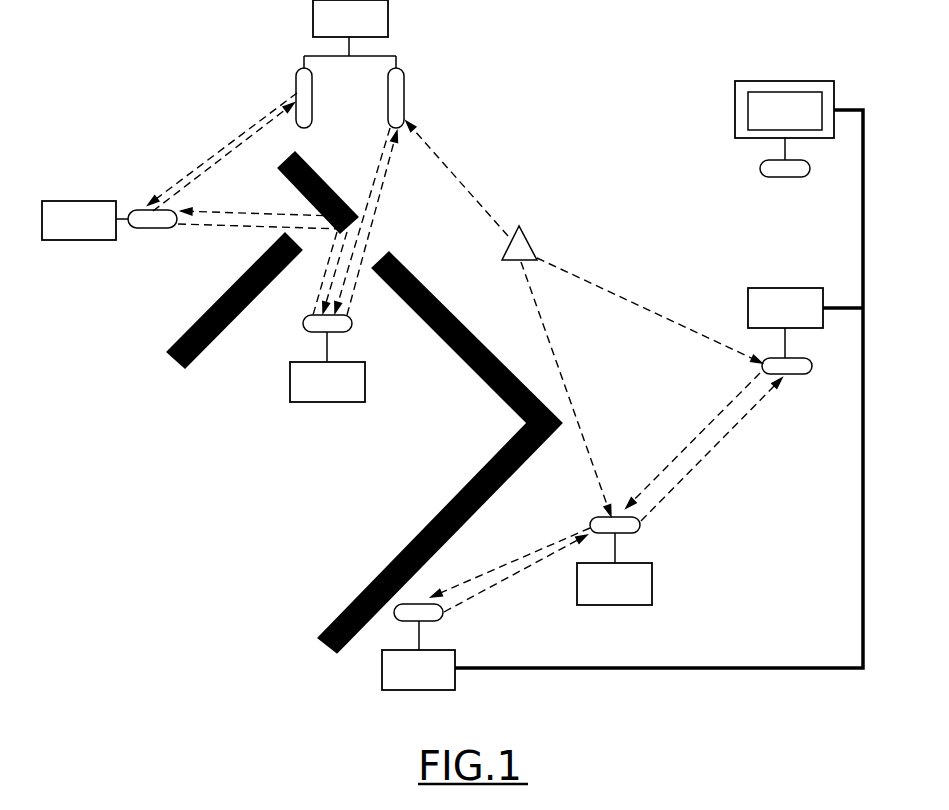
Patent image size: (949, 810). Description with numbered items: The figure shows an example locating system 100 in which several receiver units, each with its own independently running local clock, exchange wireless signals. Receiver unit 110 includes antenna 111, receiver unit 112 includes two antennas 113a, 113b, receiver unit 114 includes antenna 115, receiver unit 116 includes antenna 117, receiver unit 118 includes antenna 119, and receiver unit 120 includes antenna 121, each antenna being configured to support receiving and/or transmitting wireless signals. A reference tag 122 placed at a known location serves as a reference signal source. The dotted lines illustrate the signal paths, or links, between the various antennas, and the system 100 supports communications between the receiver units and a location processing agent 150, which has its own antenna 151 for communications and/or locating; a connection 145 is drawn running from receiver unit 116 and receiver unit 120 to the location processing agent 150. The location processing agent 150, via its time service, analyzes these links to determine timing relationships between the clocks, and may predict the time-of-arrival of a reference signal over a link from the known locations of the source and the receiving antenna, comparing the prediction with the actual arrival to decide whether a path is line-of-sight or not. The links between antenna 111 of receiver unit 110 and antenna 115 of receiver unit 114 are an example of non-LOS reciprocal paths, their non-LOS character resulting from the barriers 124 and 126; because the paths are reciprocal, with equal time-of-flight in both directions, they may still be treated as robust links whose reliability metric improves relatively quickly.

The locating system 100 is at (569, 30).
The receiver unit 110 is at (85, 220).
The antenna 111 is at (152, 219).
The receiver unit 112 is at (350, 34).
The antenna 113a is at (304, 98).
The antenna 113b is at (396, 98).
The receiver unit 114 is at (327, 367).
The antenna 115 is at (327, 323).
The receiver unit 116 is at (785, 323).
The antenna 117 is at (787, 366).
The receiver unit 118 is at (614, 569).
The antenna 119 is at (615, 525).
The receiver unit 120 is at (418, 655).
The antenna 121 is at (418, 612).
The reference tag 122 is at (530, 235).
The barrier 124 is at (301, 160).
The barrier 126 is at (196, 320).
The wired link 145 is at (866, 479).
The location processing agent 150 is at (784, 120).
The antenna 151 is at (785, 168).